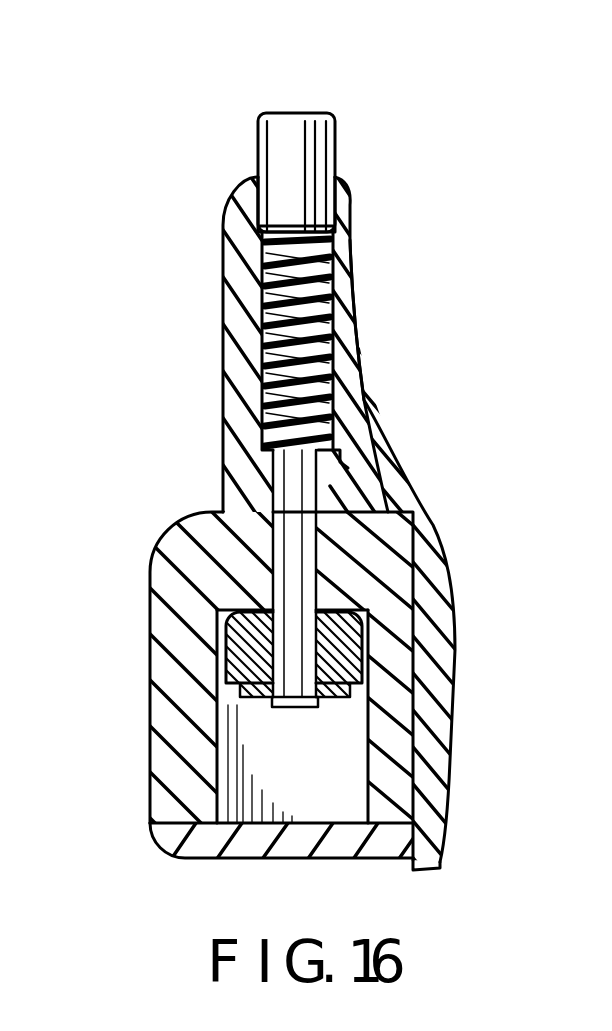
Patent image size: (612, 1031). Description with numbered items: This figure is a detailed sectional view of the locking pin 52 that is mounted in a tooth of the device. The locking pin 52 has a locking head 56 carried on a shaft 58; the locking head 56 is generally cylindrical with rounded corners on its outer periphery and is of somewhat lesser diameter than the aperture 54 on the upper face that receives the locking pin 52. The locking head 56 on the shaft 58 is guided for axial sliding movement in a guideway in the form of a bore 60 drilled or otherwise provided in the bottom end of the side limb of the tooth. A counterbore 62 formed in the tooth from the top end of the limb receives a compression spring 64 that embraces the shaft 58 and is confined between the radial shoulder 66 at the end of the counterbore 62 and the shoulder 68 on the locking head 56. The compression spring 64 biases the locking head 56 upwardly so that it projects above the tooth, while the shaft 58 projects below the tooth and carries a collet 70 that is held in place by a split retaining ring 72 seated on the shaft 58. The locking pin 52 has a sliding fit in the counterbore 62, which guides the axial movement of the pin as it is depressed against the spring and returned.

The locking pin 52 is at (258, 110).
The aperture 54 is at (238, 240).
The locking head 56 is at (295, 112).
The shaft 58 is at (288, 484).
The bore 60 is at (222, 489).
The counterbore 62 is at (258, 298).
The compression spring 64 is at (262, 340).
The radial shoulder 66 is at (347, 468).
The shoulder 68 is at (293, 225).
The collet 70 is at (238, 650).
The split retaining ring 72 is at (250, 700).